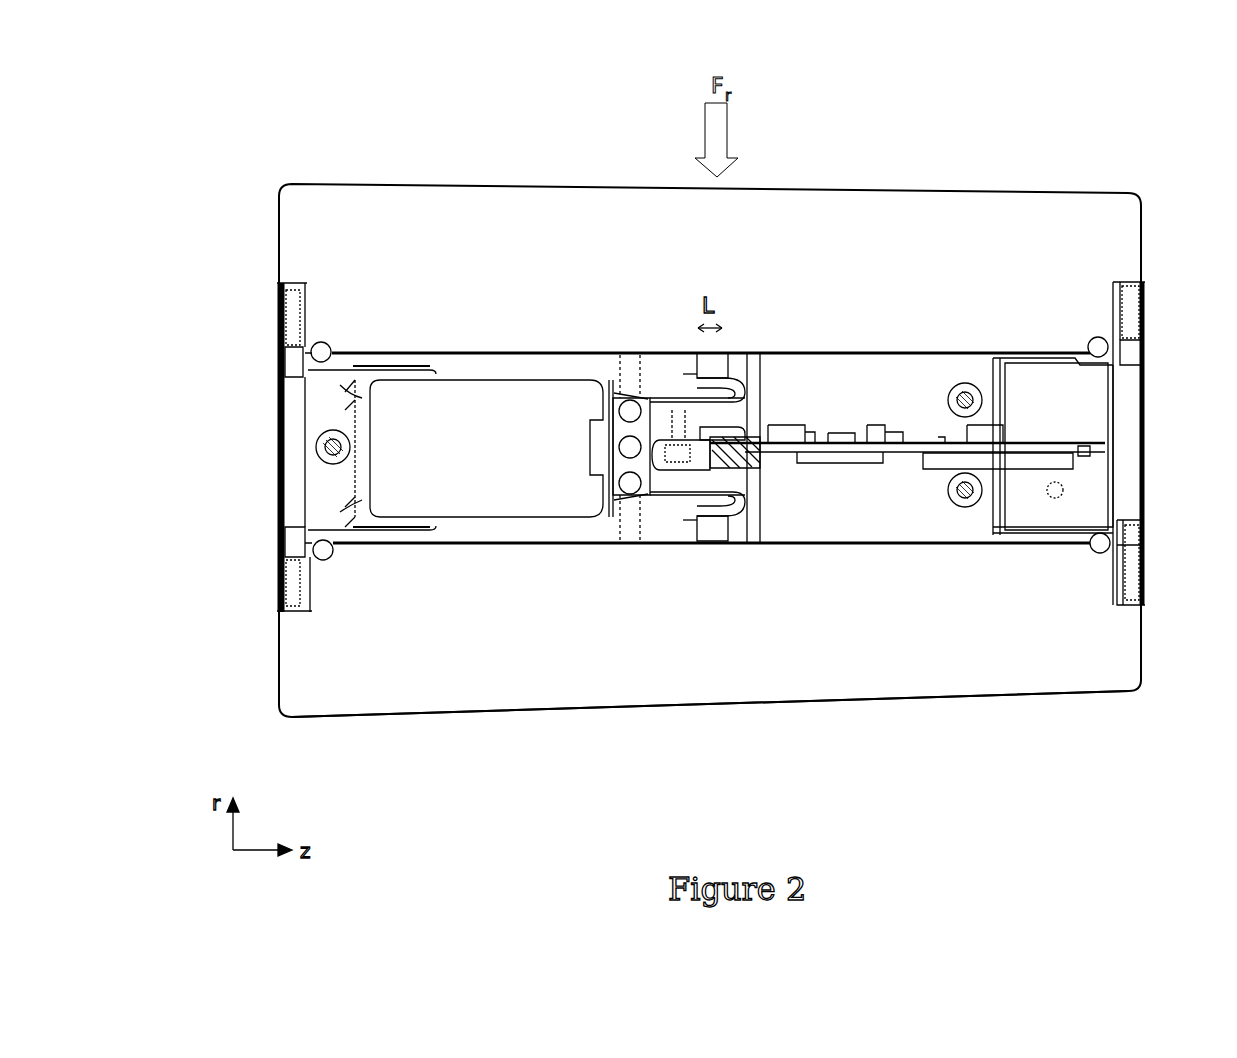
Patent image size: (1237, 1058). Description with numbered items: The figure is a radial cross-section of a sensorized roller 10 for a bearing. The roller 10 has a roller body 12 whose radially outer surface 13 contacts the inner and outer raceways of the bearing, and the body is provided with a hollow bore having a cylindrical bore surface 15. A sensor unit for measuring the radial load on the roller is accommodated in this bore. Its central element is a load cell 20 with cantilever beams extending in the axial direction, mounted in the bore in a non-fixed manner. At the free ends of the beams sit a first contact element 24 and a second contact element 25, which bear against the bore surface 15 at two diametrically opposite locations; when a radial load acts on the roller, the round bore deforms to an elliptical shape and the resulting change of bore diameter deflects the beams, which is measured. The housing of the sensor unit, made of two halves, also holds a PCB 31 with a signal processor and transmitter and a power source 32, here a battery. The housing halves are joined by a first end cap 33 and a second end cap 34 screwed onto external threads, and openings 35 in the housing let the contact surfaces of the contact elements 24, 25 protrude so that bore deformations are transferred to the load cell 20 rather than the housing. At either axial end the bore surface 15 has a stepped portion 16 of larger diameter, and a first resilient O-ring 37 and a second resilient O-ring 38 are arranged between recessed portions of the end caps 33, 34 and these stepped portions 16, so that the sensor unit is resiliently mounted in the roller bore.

The roller 10 is at (440, 150).
The roller body 12 is at (540, 647).
The radially outer surface 13 is at (488, 720).
The cylindrical bore surface 15 is at (590, 352).
The stepped portion 16 is at (322, 342).
The load cell 20 is at (640, 415).
The first contact element 24 is at (707, 360).
The second contact element 25 is at (713, 548).
The PCB 31 is at (830, 447).
The power source 32 is at (523, 462).
The first end cap 33 is at (290, 468).
The second end cap 34 is at (1134, 325).
The openings 35 is at (745, 548).
The first resilient O-ring 37 is at (316, 552).
The second resilient O-ring 38 is at (1113, 545).